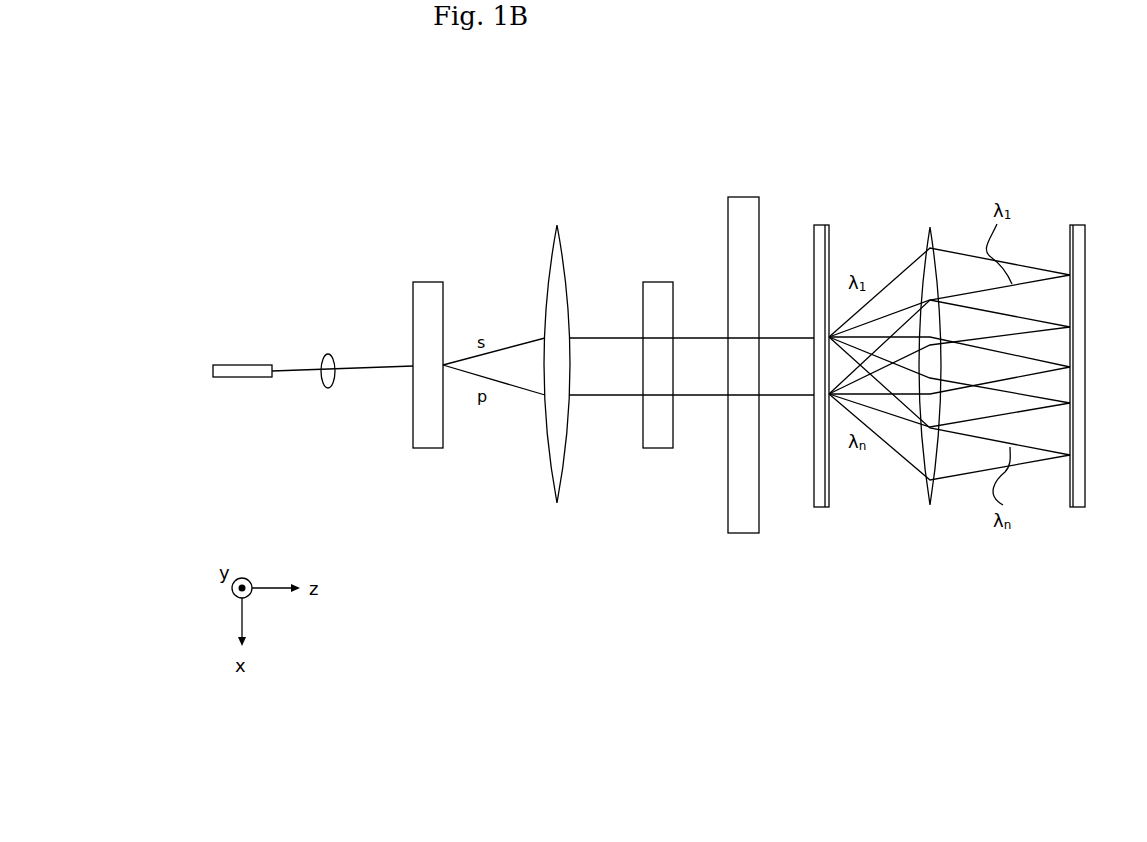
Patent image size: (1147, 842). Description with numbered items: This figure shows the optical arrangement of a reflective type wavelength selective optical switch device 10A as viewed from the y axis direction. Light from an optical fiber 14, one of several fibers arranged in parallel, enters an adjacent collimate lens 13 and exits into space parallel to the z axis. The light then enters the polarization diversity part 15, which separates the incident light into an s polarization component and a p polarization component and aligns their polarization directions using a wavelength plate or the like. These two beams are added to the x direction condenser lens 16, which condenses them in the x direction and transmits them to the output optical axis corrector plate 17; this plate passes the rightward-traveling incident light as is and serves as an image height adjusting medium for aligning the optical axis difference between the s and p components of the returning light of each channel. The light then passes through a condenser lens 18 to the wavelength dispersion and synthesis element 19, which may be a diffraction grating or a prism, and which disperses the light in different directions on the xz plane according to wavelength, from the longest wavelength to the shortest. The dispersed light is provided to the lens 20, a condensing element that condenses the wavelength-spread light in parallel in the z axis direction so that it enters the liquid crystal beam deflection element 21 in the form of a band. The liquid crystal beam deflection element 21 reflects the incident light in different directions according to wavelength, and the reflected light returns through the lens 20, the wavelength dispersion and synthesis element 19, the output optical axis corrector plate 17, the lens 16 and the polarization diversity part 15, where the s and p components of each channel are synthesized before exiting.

The reflective type wavelength selective optical switch device 10A is at (986, 140).
The optical fiber 14 is at (233, 364).
The collimate lens 13 is at (318, 363).
The polarization diversity part 15 is at (432, 282).
The x direction condenser lens 16 is at (563, 238).
The output optical axis corrector plate 17 is at (664, 282).
The condenser lens 18 is at (748, 197).
The wavelength dispersion and synthesis element 19 is at (828, 225).
The lens 20 is at (938, 238).
The liquid crystal beam deflection element 21 is at (1084, 225).